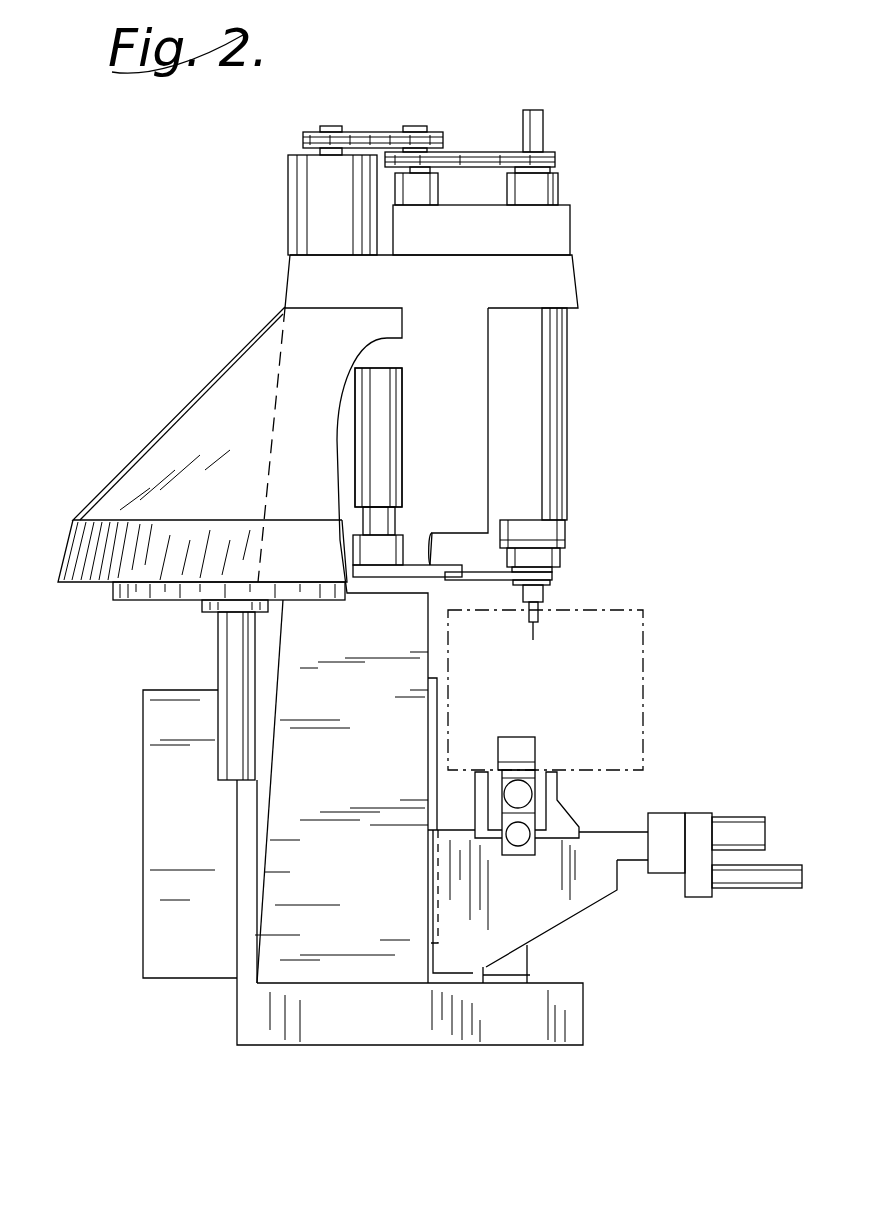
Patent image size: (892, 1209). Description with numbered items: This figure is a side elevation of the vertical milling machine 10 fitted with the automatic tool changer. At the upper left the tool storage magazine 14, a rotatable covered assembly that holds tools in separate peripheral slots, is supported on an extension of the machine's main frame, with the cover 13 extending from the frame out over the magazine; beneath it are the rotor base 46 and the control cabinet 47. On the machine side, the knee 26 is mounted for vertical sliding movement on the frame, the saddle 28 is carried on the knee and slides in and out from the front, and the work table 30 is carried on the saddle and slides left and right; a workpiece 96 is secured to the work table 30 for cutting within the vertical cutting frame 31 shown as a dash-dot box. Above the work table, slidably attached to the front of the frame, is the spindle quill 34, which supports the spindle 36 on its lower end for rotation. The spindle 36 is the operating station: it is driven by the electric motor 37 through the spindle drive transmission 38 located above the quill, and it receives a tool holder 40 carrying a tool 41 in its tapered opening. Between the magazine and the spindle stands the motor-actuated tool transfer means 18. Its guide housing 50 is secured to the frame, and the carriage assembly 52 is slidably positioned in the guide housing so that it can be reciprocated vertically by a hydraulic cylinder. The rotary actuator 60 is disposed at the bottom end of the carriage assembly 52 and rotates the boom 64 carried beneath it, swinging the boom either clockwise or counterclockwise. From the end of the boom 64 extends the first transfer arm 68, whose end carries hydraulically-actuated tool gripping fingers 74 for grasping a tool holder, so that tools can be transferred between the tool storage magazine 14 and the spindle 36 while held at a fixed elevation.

The milling machine 10 is at (200, 284).
The cover 13 is at (170, 440).
The tool storage magazine 14 is at (104, 616).
The tool transfer means 18 is at (408, 402).
The knee 26 is at (590, 885).
The saddle 28 is at (568, 832).
The work table 30 is at (530, 770).
The vertical cutting frame 31 is at (645, 690).
The spindle quill 34 is at (543, 524).
The spindle 36 is at (563, 560).
The electric motor 37 is at (307, 190).
The spindle drive transmission 38 is at (399, 113).
The tool holder 40 is at (543, 593).
The tool 41 is at (533, 624).
The rotor base 46 is at (230, 648).
The control cabinet 47 is at (160, 864).
The guide housing 50 is at (385, 425).
The carriage assembly 52 is at (355, 523).
The rotary actuator 60 is at (408, 545).
The boom 64 is at (406, 580).
The first transfer arm 68 is at (484, 581).
The tool gripping finger 74 is at (552, 576).
The workpiece 96 is at (514, 745).